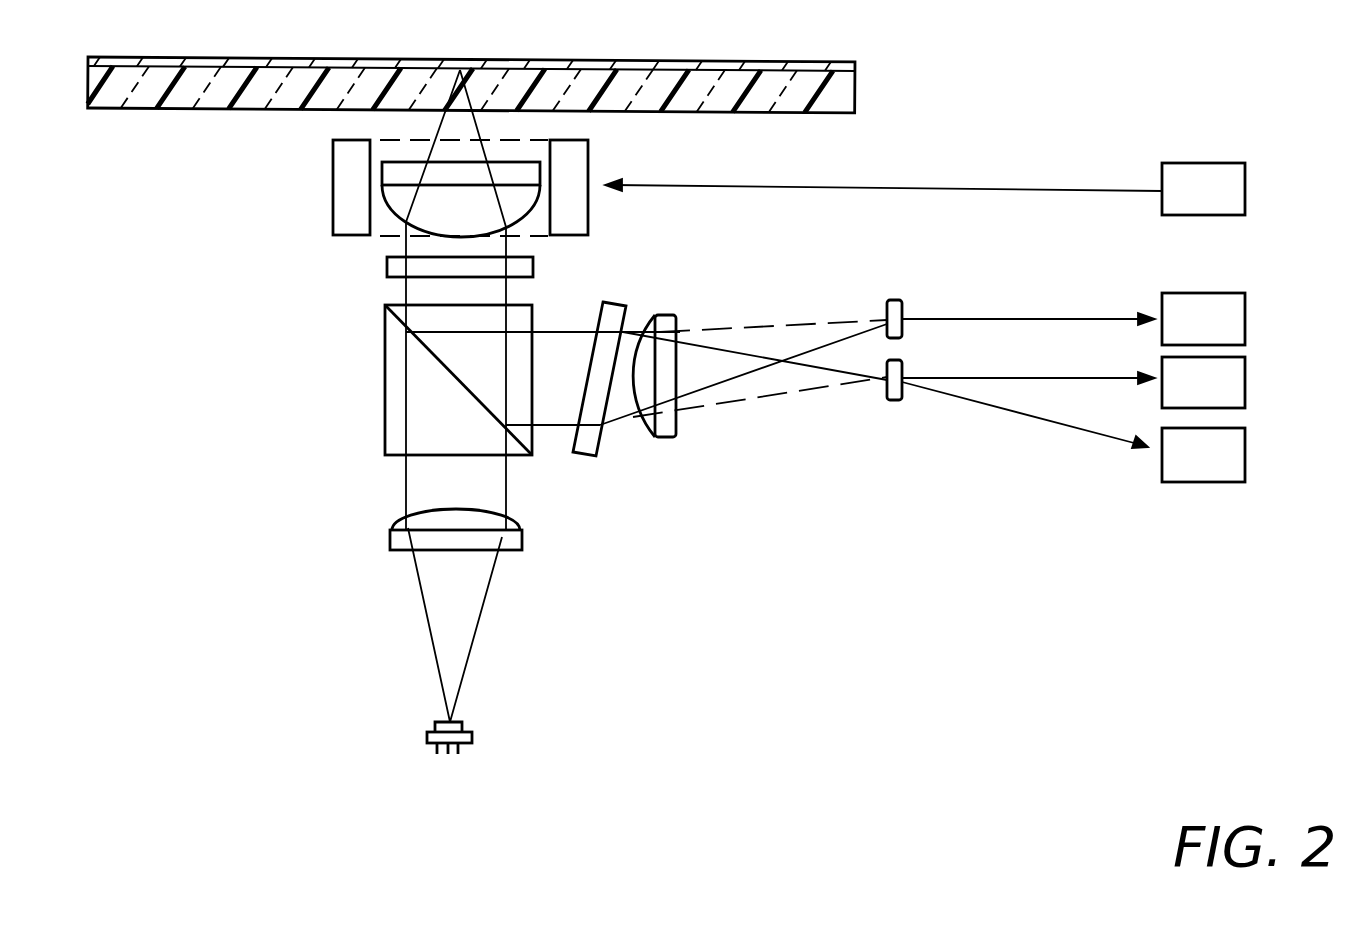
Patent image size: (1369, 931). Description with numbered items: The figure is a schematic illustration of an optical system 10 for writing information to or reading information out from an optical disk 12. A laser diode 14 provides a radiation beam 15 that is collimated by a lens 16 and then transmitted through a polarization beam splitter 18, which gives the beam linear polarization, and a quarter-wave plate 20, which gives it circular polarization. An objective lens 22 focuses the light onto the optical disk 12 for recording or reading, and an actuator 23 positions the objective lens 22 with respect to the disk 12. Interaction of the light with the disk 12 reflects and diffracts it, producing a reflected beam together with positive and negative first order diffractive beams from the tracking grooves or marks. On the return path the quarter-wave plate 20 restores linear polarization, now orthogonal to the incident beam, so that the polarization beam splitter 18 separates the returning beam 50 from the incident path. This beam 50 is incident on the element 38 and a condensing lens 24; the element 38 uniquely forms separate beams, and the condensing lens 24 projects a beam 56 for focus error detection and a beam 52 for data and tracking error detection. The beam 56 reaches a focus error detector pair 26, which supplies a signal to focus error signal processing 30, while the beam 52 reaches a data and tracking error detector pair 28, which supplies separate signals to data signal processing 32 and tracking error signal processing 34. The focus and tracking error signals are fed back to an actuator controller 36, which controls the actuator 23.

The optical system 10 is at (842, 600).
The optical disk 12 is at (227, 110).
The laser diode 14 is at (427, 738).
The radiation beam 15 is at (434, 652).
The lens 16 is at (390, 541).
The polarization beam splitter 18 is at (385, 380).
The quarter-wave plate 20 is at (388, 270).
The objective lens 22 is at (395, 214).
The actuator 23 is at (333, 182).
The condensing lens 24 is at (667, 440).
The focus error detector pair 26 is at (895, 300).
The data and tracking error detector pair 28 is at (897, 400).
The focus error signal processing 30 is at (1245, 306).
The data signal processing 32 is at (1245, 443).
The tracking error signal processing 34 is at (1245, 370).
The actuator controller 36 is at (1245, 178).
The element 38 is at (583, 457).
The reflected beam 50 is at (553, 428).
The beam for data and tracking error detection 52 is at (790, 398).
The beam for focus error detection 56 is at (757, 327).